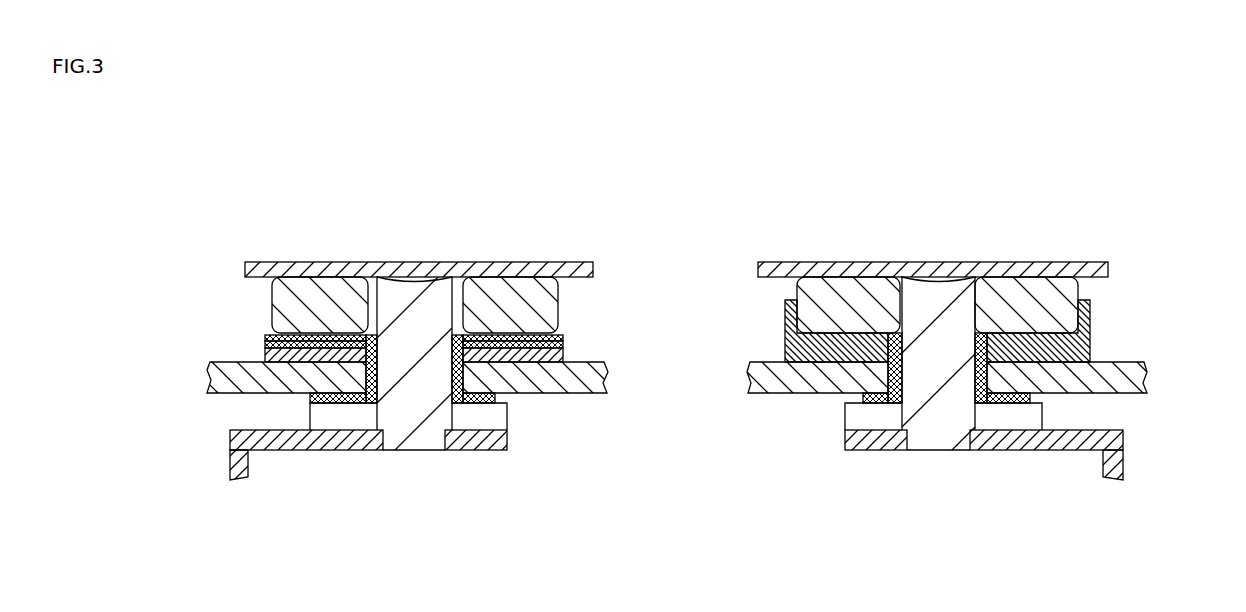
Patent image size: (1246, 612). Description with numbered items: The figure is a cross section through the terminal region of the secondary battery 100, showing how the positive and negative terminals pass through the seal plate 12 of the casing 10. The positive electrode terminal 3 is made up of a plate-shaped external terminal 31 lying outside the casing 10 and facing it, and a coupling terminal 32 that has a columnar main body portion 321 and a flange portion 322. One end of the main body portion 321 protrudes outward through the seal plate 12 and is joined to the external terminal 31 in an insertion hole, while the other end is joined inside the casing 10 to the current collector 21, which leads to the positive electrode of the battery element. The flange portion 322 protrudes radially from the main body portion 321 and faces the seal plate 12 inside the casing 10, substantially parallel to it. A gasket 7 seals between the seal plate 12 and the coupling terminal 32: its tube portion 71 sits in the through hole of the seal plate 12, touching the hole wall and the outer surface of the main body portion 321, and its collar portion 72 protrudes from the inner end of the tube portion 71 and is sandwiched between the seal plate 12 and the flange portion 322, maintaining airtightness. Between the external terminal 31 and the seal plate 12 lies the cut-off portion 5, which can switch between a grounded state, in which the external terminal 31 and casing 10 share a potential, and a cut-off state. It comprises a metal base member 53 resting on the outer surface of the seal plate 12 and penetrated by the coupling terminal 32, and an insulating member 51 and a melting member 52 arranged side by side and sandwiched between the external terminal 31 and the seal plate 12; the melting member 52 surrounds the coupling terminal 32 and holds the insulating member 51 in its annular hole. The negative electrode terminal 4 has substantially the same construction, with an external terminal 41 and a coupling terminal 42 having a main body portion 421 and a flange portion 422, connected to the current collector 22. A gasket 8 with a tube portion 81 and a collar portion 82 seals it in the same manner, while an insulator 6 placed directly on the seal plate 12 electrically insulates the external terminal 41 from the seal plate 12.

The secondary battery 100 is at (1138, 173).
The positive electrode terminal 3 is at (302, 191).
The external terminal 31 is at (328, 293).
The coupling terminal 32 is at (419, 290).
The main body portion 321 is at (415, 418).
The flange portion 322 is at (342, 418).
The negative electrode terminal 4 is at (1037, 188).
The external terminal 41 is at (1028, 293).
The coupling terminal 42 is at (942, 290).
The main body portion 421 is at (938, 420).
The flange portion 422 is at (1007, 420).
The cut-off portion 5 is at (163, 203).
The insulating member 51 is at (300, 340).
The melting member 52 is at (330, 342).
The base member 53 is at (290, 357).
The insulator 6 is at (1073, 348).
The gasket 7 is at (455, 553).
The tube portion 71 is at (457, 373).
The collar portion 72 is at (483, 403).
The gasket 8 is at (773, 553).
The tube portion 81 is at (897, 370).
The collar portion 82 is at (868, 400).
The casing 10 is at (1108, 333).
The seal plate 12 is at (1128, 377).
The current collector 21 is at (238, 438).
The current collector 22 is at (1107, 438).